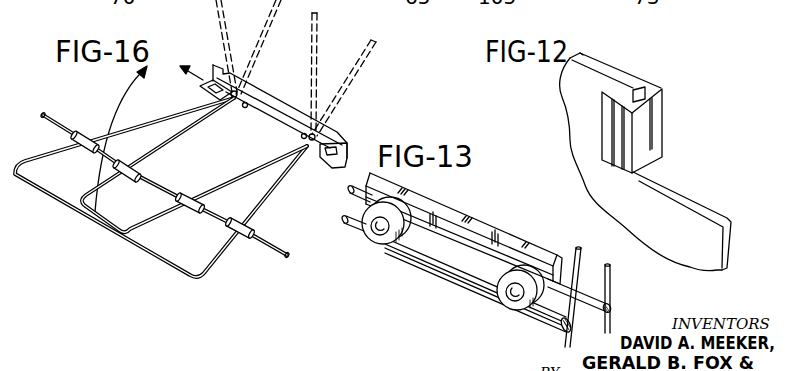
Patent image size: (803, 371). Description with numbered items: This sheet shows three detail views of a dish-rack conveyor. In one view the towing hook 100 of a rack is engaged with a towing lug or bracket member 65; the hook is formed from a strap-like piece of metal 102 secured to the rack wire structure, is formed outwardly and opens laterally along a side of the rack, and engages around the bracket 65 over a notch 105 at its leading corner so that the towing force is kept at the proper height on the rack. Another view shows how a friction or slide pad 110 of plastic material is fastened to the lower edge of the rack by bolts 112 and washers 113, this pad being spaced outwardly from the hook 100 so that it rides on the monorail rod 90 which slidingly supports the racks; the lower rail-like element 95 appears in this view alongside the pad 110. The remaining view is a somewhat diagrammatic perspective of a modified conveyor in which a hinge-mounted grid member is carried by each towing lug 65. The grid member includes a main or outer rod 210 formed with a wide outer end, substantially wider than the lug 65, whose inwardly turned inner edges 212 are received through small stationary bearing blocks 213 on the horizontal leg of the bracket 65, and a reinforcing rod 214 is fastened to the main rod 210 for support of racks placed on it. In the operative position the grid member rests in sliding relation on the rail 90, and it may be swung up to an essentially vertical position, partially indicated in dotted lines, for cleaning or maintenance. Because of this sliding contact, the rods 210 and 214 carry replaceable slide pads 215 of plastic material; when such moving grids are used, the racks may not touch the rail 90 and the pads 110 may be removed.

In FIG. 16, the towing lug or bracket member 65 is at (300, 100).
In FIG. 12, the towing lug or bracket member 65 is at (575, 141).
In FIG. 16, the monorail rod or strap 90 is at (262, 243).
In FIG. 13, the lower rail 95 is at (460, 286).
In FIG. 12, the towing hook 100 is at (660, 126).
In FIG. 12, the strap-like piece of metal 102 is at (617, 66).
In FIG. 12, the notch 105 is at (681, 194).
In FIG. 13, the friction or slide pad 110 is at (487, 230).
In FIG. 13, the bolt 112 is at (378, 238).
In FIG. 13, the washer 113 is at (388, 242).
In FIG. 16, the main or outer rod 210 is at (364, 81).
In FIG. 16, the inwardly turned inner edge 212 is at (238, 93).
In FIG. 16, the stationary bearing block 213 is at (298, 140).
In FIG. 16, the reinforcing rod 214 is at (233, 181).
In FIG. 16, the replaceable slide pad 215 is at (92, 133).